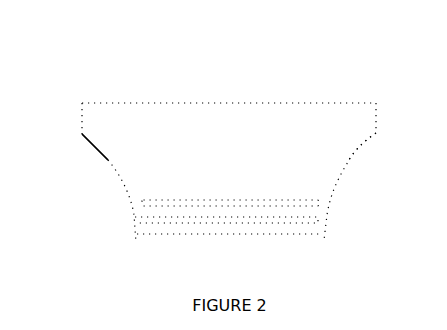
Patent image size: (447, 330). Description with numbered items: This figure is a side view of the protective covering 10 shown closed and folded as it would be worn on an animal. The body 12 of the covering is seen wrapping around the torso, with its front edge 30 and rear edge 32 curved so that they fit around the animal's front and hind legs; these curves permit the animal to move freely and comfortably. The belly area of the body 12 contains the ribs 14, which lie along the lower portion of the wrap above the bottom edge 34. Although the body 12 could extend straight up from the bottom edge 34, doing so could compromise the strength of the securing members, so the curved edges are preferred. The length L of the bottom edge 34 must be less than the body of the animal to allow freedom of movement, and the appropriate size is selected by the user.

The protective covering 10 is at (76, 63).
The body 12 is at (229, 172).
The ribs 14 is at (141, 221).
The front edge 30 is at (107, 162).
The rear edge 32 is at (349, 163).
The bottom edge 34 is at (263, 223).
The length L is at (158, 234).